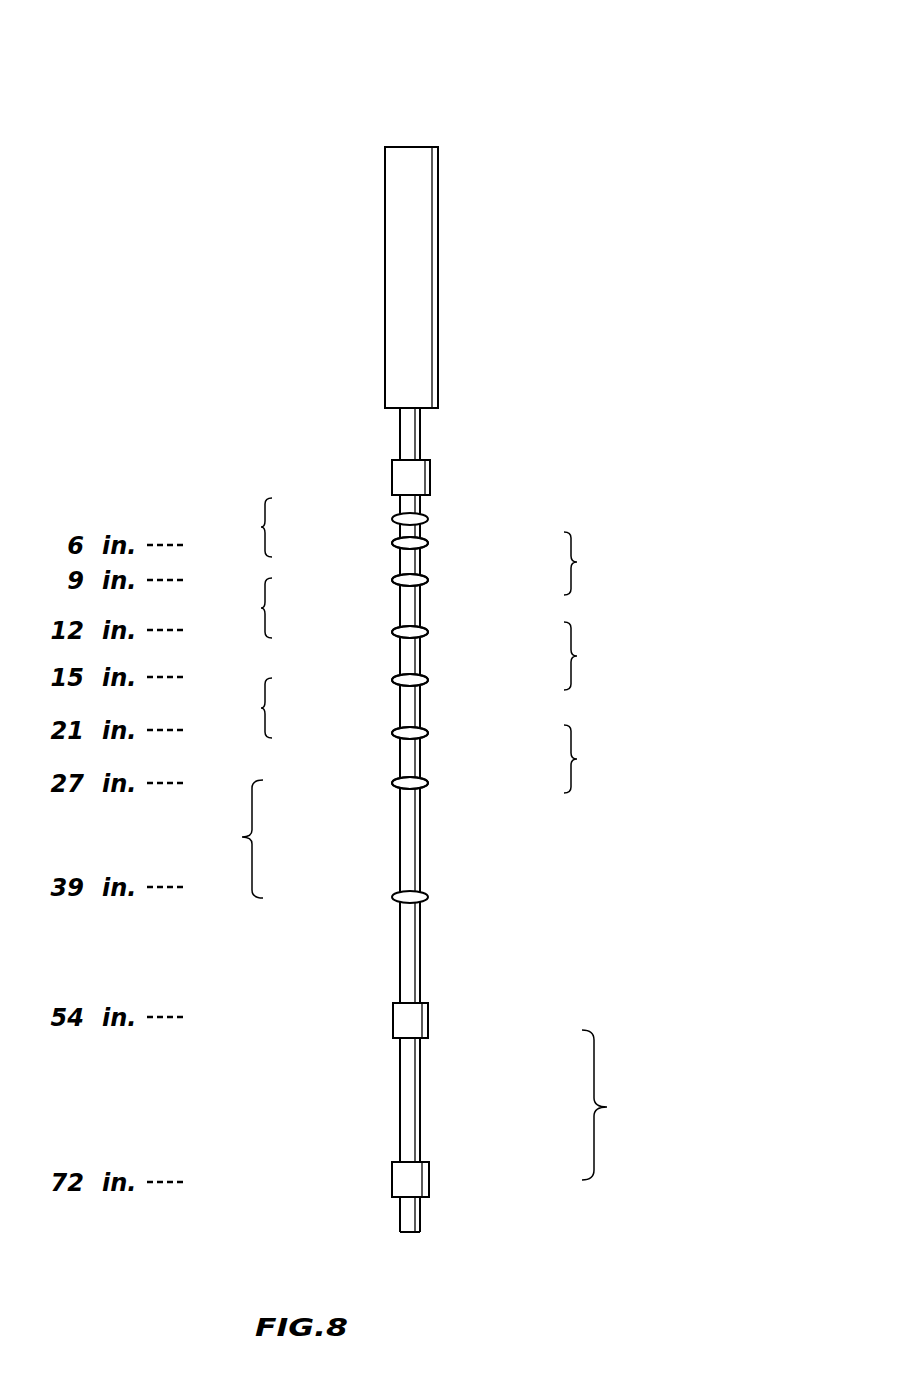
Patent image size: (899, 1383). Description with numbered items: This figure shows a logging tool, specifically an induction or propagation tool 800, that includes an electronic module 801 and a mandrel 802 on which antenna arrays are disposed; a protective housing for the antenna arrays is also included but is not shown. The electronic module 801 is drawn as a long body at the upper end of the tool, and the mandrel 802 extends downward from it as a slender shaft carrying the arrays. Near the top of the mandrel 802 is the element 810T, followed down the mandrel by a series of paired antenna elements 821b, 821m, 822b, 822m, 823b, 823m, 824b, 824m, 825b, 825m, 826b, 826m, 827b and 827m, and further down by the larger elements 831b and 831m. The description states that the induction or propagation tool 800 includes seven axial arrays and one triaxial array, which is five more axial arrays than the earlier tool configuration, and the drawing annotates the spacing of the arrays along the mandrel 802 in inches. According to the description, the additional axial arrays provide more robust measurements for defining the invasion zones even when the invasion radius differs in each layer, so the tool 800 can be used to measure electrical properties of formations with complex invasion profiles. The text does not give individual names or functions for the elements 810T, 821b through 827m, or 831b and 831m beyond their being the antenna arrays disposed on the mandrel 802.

The induction or propagation tool 800 is at (238, 110).
The electronic module 801 is at (438, 330).
The mandrel 802 is at (400, 433).
The top sensor block 810T is at (432, 477).
The sensor 821 base ring 821b is at (393, 519).
The sensor 821 measurement ring 821m is at (393, 543).
The sensor 822 base ring 822b is at (428, 542).
The sensor 822 measurement ring 822m is at (428, 580).
The sensor 823 base ring 823b is at (393, 580).
The sensor 823 measurement ring 823m is at (393, 632).
The sensor 824 base ring 824b is at (428, 632).
The sensor 824 measurement ring 824m is at (428, 680).
The sensor 825 base ring 825b is at (393, 680).
The sensor 825 measurement ring 825m is at (393, 733).
The sensor 826 base ring 826b is at (428, 733).
The sensor 826 measurement ring 826m is at (428, 783).
The sensor 827 base ring 827b is at (393, 783).
The sensor 827 measurement ring 827m is at (393, 897).
The sensor 831 base block 831b is at (420, 1018).
The sensor 831 measurement block 831m is at (420, 1178).